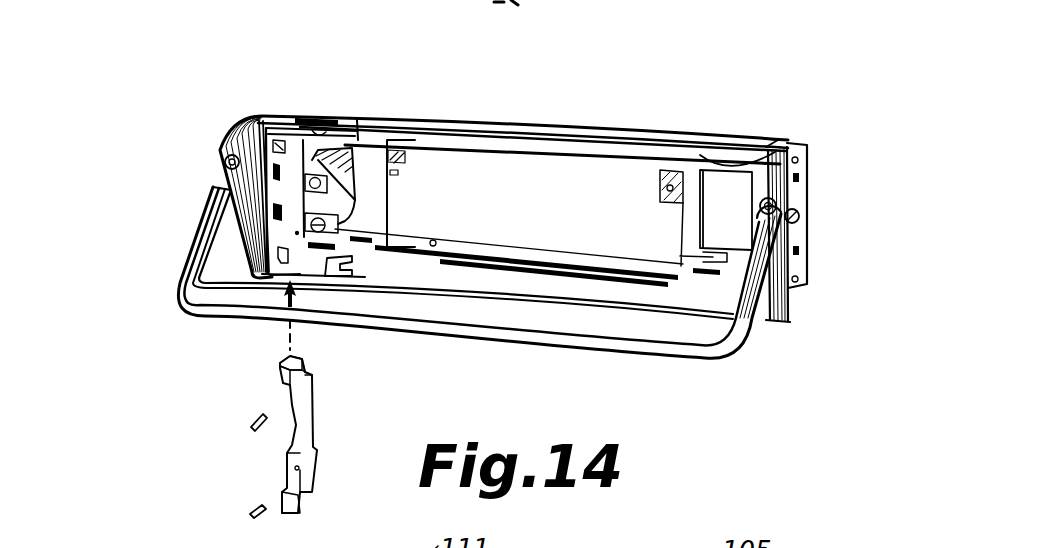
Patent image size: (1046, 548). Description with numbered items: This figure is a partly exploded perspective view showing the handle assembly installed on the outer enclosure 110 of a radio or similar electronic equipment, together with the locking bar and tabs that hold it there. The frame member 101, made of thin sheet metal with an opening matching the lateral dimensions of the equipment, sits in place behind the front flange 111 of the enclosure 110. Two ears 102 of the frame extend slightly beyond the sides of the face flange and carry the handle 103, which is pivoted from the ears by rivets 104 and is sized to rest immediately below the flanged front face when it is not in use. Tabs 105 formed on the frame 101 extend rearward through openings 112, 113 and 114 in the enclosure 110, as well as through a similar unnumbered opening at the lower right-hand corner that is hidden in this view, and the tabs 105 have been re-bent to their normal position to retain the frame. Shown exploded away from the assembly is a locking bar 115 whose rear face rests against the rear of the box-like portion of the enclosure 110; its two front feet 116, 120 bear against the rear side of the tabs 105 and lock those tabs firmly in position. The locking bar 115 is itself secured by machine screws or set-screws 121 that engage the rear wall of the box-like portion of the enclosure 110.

The frame member 101 is at (373, 135).
The ears 102 is at (222, 547).
The handle 103 is at (185, 243).
The rivets 104 is at (225, 157).
The tabs 105 is at (267, 127).
The outer enclosure 110 is at (355, 170).
The front flange 111 is at (295, 114).
The opening 112 is at (292, 112).
The opening 113 is at (785, 145).
The opening 114 is at (298, 236).
The locking bar 115 is at (270, 436).
The front foot 116 is at (280, 371).
The front foot 120 is at (306, 496).
The machine screws or set-screws 121 is at (260, 503).